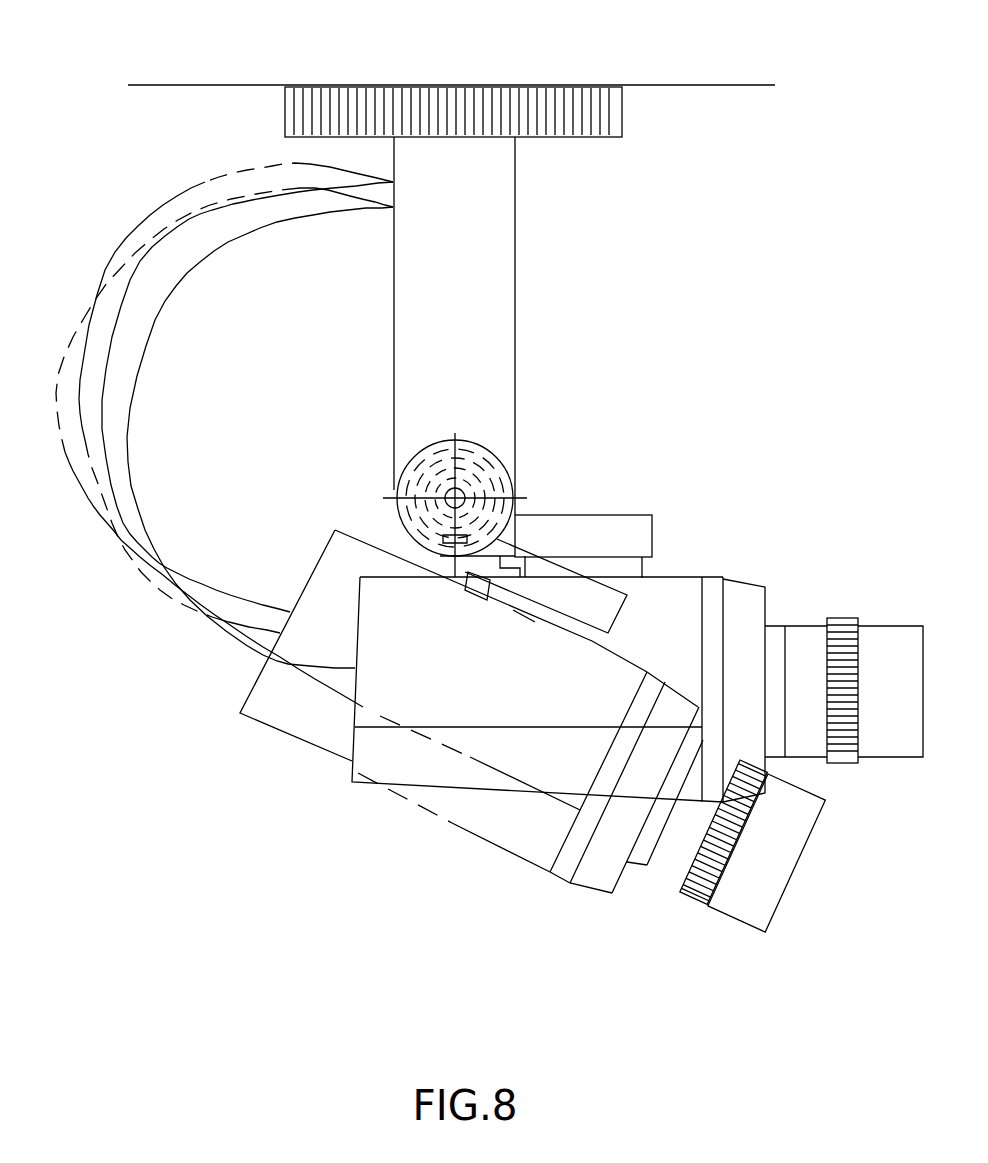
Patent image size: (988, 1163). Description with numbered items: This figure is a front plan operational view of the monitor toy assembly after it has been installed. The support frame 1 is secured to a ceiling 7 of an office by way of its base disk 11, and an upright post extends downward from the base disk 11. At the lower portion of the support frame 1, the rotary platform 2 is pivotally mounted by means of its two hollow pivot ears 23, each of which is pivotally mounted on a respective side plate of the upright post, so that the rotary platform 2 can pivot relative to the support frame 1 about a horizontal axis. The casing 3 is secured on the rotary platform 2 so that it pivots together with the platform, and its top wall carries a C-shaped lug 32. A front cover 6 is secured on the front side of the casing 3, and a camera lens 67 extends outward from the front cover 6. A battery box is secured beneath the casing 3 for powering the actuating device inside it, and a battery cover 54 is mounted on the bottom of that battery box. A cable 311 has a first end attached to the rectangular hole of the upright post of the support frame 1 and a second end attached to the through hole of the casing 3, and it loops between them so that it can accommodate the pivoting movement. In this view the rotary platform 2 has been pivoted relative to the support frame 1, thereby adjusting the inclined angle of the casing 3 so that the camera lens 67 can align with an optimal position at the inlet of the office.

The ceiling 7 is at (722, 85).
The base disk 11 is at (617, 127).
The support frame 1 is at (533, 265).
The pivot ears 23 is at (495, 470).
The rotary platform 2 is at (613, 535).
The C-shaped lug 32 is at (638, 570).
The front cover 6 is at (745, 597).
The casing 3 is at (398, 693).
The battery cover 54 is at (442, 772).
The camera lens 67 is at (900, 745).
The cable 311 is at (223, 640).